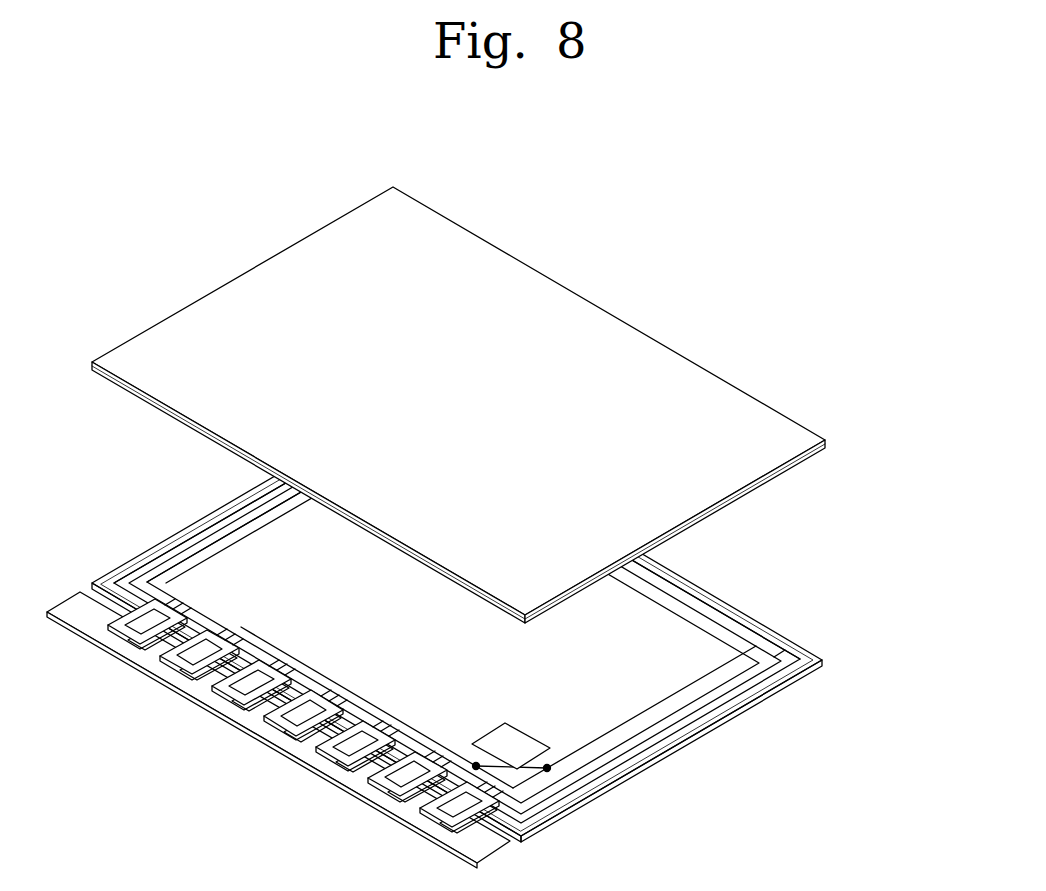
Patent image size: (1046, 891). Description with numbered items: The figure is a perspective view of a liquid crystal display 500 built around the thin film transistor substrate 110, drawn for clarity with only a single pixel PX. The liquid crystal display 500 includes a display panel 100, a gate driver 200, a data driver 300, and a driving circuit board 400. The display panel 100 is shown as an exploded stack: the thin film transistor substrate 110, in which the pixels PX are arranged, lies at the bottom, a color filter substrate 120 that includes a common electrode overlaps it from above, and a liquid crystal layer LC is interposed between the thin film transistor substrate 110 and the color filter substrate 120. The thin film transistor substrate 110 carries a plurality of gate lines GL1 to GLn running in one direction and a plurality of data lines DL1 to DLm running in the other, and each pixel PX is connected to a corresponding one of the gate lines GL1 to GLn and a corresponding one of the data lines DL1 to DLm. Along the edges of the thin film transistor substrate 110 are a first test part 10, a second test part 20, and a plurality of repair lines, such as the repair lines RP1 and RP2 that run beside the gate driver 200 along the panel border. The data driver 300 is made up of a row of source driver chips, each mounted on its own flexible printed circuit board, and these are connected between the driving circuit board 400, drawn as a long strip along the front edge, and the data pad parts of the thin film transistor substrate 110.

The liquid crystal display 500 is at (226, 206).
The display panel 100 is at (903, 438).
The thin film transistor substrate 110 is at (826, 662).
The color filter substrate 120 is at (828, 441).
The liquid crystal layer LC is at (772, 567).
The first test part 10 is at (713, 613).
The second test part 20 is at (232, 530).
The gate line GL1 is at (313, 668).
The gate line GLn is at (672, 615).
The data line DL1 is at (672, 692).
The data line DLm is at (205, 567).
The pixel PX is at (511, 747).
The gate driver 200 is at (737, 683).
The repair line RP1 is at (703, 715).
The repair line RP2 is at (670, 742).
The data driver 300 is at (398, 797).
The driving circuit board 400 is at (507, 853).